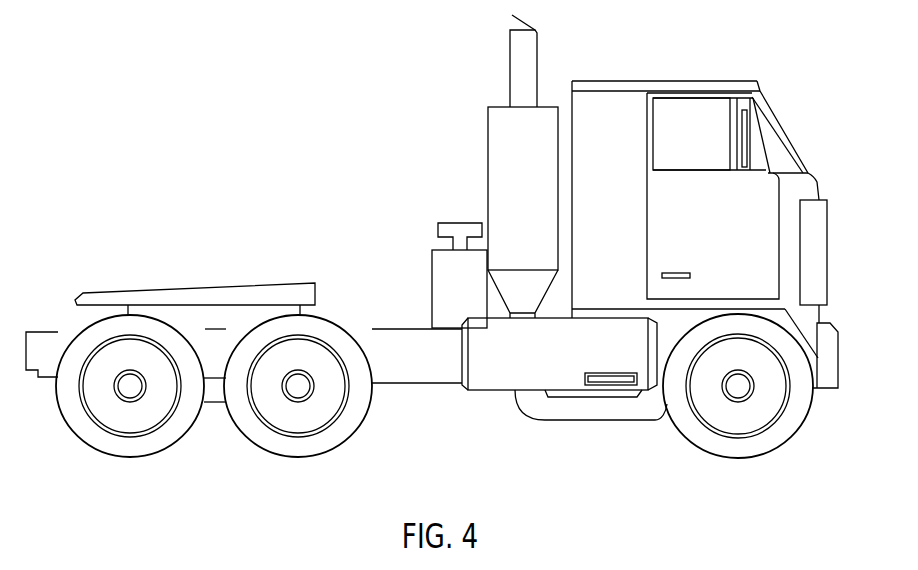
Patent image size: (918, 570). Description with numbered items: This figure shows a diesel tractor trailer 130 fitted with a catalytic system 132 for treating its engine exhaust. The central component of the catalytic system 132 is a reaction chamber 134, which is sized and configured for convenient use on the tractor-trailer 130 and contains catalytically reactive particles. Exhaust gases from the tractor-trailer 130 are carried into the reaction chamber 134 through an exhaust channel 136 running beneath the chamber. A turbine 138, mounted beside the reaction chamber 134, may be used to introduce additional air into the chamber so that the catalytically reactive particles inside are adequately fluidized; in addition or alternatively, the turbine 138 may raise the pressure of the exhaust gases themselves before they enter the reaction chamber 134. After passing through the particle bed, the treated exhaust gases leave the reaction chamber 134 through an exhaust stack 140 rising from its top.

The diesel tractor trailer 130 is at (795, 122).
The catalytic system 132 is at (469, 170).
The reaction chamber 134 is at (509, 197).
The exhaust channel 136 is at (582, 412).
The turbine 138 is at (444, 301).
The exhaust stack 140 is at (527, 47).